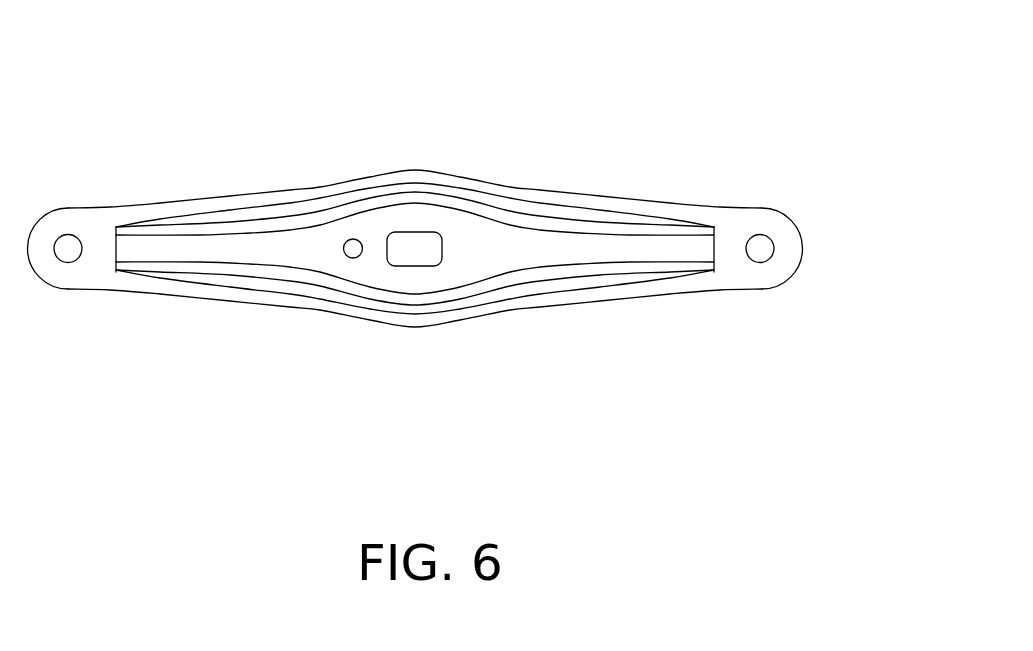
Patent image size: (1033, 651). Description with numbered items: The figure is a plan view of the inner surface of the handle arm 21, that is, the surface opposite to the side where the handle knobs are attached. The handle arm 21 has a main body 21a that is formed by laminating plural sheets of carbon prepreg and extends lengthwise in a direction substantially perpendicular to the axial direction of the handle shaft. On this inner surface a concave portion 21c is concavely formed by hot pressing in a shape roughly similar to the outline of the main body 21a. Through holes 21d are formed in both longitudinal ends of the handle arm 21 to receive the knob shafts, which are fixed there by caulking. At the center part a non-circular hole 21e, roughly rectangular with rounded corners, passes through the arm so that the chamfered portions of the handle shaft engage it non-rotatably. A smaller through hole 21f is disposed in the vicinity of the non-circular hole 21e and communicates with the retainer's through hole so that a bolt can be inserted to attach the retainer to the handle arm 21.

The handle arm 21 is at (617, 140).
The main body 21a is at (530, 205).
The concave portion 21c is at (288, 235).
The through holes 21d is at (68, 250).
The non-circular hole 21e is at (430, 262).
The through hole 21f is at (353, 258).